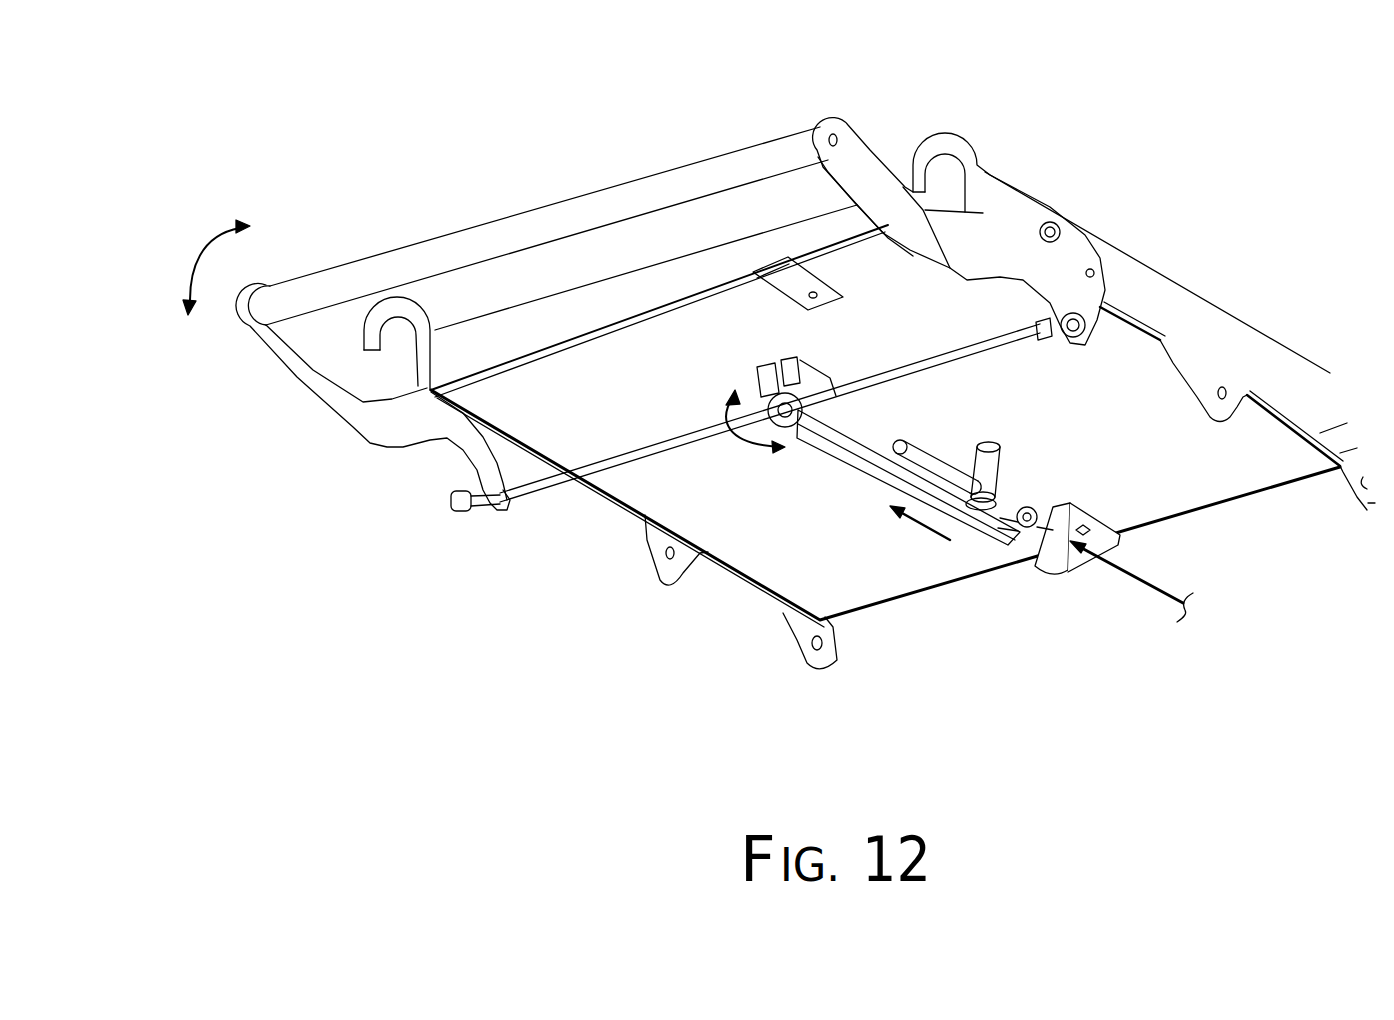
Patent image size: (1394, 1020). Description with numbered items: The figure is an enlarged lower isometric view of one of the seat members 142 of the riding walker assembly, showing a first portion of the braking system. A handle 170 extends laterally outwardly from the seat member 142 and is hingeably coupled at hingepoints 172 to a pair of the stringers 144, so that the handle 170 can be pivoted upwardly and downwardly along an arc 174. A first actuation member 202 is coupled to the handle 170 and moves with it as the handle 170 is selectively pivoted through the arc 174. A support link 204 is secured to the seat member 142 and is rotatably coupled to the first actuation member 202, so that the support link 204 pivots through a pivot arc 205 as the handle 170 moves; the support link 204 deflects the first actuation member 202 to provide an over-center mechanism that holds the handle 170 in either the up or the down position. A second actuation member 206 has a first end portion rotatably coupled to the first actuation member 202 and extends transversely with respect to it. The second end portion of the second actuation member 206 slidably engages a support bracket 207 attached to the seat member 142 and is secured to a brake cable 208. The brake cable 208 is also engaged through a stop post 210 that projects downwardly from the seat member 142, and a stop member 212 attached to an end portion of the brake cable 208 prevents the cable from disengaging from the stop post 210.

The seat member 142 is at (893, 603).
The stringers 144 is at (1177, 300).
The handle 170 is at (623, 187).
The hingepoints 172 is at (1050, 222).
The arc 174 is at (200, 257).
The first actuation member 202 is at (666, 447).
The support link 204 is at (767, 403).
The pivot arc 205 is at (750, 443).
The second actuation member 206 is at (887, 468).
The support bracket 207 is at (1077, 510).
The brake cable 208 is at (1133, 582).
The stop post 210 is at (998, 465).
The stop member 212 is at (913, 440).